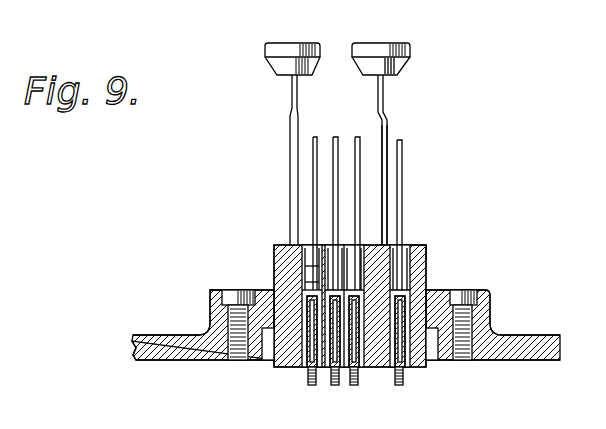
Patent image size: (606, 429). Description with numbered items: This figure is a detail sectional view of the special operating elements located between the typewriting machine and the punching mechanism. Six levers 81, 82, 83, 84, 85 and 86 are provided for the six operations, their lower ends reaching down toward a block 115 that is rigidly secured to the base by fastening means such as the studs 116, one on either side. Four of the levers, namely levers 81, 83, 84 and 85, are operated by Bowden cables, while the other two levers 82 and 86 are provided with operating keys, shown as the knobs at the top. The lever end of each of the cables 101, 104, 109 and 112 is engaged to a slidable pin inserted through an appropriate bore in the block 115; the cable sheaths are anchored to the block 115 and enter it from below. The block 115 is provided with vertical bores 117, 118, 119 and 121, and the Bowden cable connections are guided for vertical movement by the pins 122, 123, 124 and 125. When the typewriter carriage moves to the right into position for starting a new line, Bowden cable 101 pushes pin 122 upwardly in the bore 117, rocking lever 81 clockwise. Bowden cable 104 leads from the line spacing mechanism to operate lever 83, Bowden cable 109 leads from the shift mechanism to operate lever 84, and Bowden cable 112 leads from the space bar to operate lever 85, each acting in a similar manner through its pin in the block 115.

The lever 81 is at (404, 165).
The lever 82 is at (380, 120).
The lever 83 is at (362, 148).
The lever 84 is at (335, 146).
The lever 85 is at (316, 132).
The lever 86 is at (290, 148).
The Bowden cable 101 is at (403, 378).
The Bowden cable 104 is at (354, 385).
The Bowden cable 109 is at (334, 384).
The Bowden cable 112 is at (307, 378).
The block 115 is at (210, 293).
The stud 116 is at (232, 290).
The vertical bore 117 is at (426, 257).
The vertical bore 118 is at (404, 240).
The vertical bore 119 is at (313, 245).
The vertical bore 121 is at (306, 258).
The pin 122 is at (413, 246).
The pin 123 is at (386, 215).
The pin 124 is at (306, 282).
The pin 125 is at (306, 268).